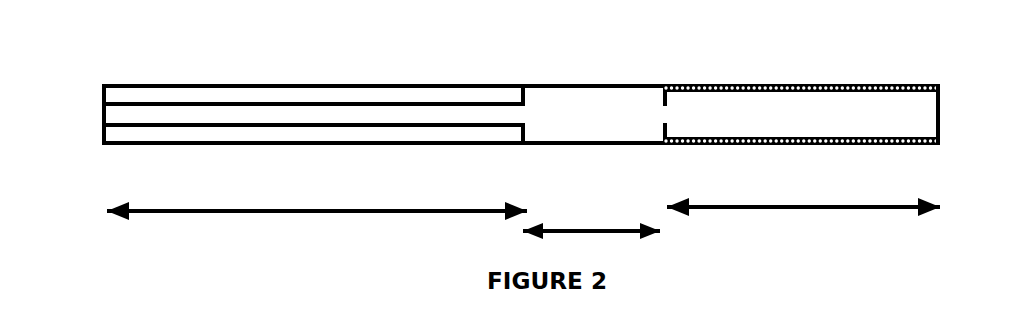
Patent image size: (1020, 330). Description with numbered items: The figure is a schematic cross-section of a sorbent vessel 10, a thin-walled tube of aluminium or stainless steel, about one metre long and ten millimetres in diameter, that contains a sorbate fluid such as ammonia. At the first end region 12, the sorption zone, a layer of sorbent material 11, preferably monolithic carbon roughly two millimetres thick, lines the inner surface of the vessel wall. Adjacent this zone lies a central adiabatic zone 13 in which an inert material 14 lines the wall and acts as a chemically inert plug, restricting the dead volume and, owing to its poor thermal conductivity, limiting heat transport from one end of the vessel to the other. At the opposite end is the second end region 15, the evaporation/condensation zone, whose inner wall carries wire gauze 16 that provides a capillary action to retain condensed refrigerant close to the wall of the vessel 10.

The sorbent vessel 10 is at (247, 75).
The sorbent material 11 is at (181, 142).
The first end region 12 is at (317, 200).
The central adiabatic zone 13 is at (591, 218).
The inert material 14 is at (644, 92).
The second end region 15 is at (803, 196).
The wire gauze 16 is at (873, 85).